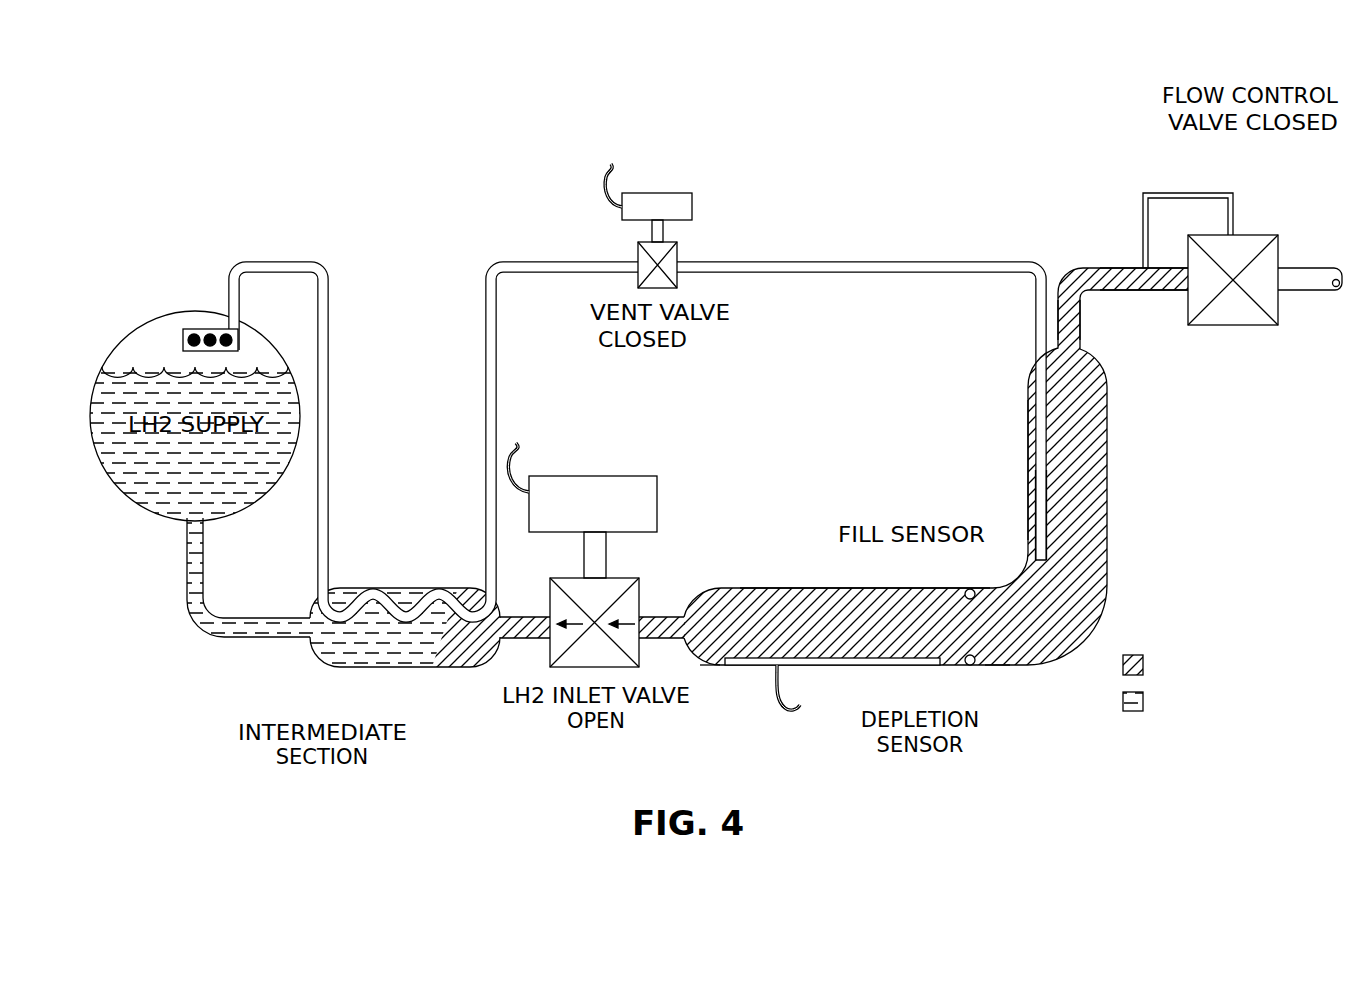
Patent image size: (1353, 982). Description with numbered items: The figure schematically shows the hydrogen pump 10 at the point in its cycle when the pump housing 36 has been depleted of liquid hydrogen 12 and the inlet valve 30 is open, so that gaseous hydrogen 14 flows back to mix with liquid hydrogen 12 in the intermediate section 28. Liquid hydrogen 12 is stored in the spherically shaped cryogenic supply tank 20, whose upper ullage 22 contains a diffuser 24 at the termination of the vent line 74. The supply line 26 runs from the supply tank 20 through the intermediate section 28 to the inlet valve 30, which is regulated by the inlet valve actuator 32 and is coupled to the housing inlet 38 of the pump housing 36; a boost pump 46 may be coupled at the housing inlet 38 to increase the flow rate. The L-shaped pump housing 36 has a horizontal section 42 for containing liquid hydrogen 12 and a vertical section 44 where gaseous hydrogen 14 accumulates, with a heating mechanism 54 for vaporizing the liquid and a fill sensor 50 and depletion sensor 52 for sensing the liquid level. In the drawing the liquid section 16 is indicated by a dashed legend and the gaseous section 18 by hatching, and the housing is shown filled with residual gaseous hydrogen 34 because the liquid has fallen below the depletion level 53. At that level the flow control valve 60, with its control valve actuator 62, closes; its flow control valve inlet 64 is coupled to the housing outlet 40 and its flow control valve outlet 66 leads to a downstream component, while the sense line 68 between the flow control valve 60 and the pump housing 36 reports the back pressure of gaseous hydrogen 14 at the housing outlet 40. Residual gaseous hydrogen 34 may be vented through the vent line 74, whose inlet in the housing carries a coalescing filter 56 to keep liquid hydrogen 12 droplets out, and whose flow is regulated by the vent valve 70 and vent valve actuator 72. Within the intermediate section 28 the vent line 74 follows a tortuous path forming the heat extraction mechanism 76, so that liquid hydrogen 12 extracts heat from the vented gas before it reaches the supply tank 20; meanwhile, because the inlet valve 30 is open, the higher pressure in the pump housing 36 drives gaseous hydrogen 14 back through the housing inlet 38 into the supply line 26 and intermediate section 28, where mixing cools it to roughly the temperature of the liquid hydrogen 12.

The hydrogen pump 10 is at (352, 180).
The liquid hydrogen 12 is at (137, 478).
The gaseous hydrogen 14 is at (466, 654).
The liquid section 16 is at (1222, 717).
The gaseous section 18 is at (1222, 643).
The supply tank 20 is at (115, 346).
The ullage 22 is at (155, 333).
The diffuser 24 is at (203, 328).
The supply line 26 is at (237, 638).
The intermediate section 28 is at (327, 661).
The inlet valve 30 is at (616, 578).
The inlet valve actuator 32 is at (638, 476).
The residual gaseous hydrogen 34 is at (1073, 579).
The pump housing 36 is at (1166, 513).
The housing inlet 38 is at (683, 606).
The housing outlet 40 is at (1080, 334).
The horizontal section 42 is at (773, 588).
The vertical section 44 is at (1028, 401).
The boost pump 46 is at (707, 667).
The fill sensor 50 is at (970, 589).
The depletion sensor 52 is at (968, 666).
The depletion level 53 is at (978, 666).
The heating mechanism 54 is at (822, 666).
The coalescing filter 56 is at (1040, 458).
The flow control valve 60 is at (1238, 231).
The control valve actuator 62 is at (1260, 233).
The flow control valve inlet 64 is at (1178, 291).
The flow control valve outlet 66 is at (1280, 292).
The sense line 68 is at (1155, 193).
The vent valve 70 is at (733, 351).
The vent valve actuator 72 is at (672, 193).
The vent line 74 is at (640, 414).
The heat extraction mechanism 76 is at (373, 594).